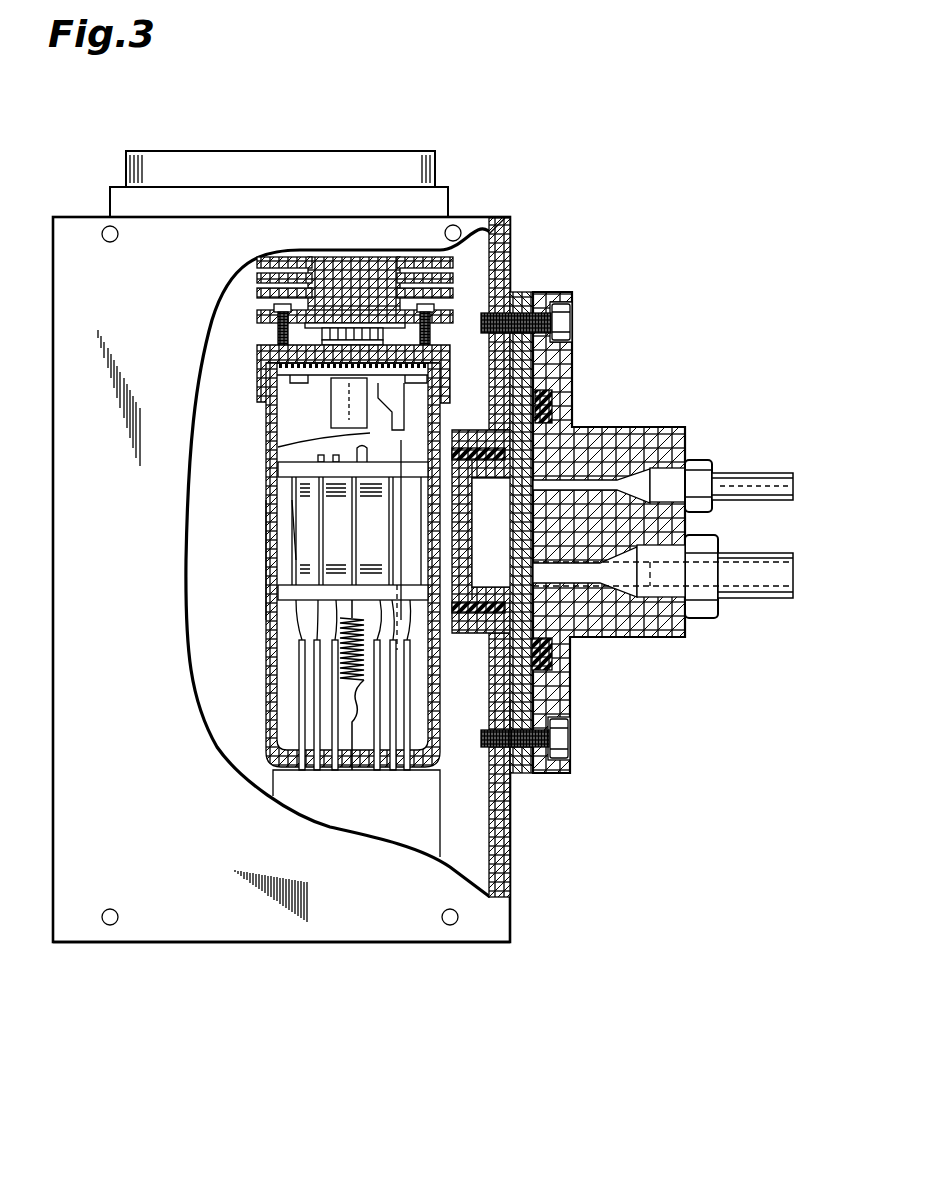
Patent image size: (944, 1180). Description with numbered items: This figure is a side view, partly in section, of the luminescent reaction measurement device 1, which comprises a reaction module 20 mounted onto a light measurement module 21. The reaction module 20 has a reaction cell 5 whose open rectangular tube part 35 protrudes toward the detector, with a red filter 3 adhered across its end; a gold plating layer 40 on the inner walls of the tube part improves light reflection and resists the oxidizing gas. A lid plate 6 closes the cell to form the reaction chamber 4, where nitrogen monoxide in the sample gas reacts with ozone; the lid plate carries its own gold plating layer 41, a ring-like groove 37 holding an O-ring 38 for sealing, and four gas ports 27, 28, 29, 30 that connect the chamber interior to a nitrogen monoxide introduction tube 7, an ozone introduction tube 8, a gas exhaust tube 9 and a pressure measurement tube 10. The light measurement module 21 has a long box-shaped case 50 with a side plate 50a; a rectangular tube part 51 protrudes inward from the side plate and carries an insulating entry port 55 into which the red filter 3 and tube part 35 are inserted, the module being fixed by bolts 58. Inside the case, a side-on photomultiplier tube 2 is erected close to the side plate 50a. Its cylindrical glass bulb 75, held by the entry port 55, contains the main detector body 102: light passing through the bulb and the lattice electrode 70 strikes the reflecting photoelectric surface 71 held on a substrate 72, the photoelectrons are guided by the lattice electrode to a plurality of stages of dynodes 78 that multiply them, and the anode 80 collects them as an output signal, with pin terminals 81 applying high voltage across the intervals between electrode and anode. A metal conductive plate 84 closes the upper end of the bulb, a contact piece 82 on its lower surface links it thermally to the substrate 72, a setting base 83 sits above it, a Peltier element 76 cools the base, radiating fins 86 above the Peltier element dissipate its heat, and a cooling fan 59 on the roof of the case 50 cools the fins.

The luminescent reaction measurement device 1 is at (500, 1050).
The photomultiplier tube 2 is at (262, 563).
The red filter 3 is at (472, 650).
The reaction chamber 4 is at (560, 648).
The reaction cell 5 is at (523, 289).
The lid plate 6 is at (555, 290).
The nitrogen monoxide introduction tube 7 is at (765, 482).
The ozone introduction tube 8 is at (727, 488).
The gas exhaust tube 9 is at (752, 597).
The pressure measurement tube 10 is at (771, 582).
The reaction module 20 is at (618, 848).
The light measurement module 21 is at (340, 946).
The gas port 27 is at (617, 480).
The gas port 28 is at (650, 465).
The gas port 29 is at (622, 565).
The gas port 30 is at (672, 600).
The rectangular tube part 35 is at (496, 468).
The groove 37 is at (548, 398).
The O-ring 38 is at (552, 412).
The gold plating layer 40 is at (520, 576).
The gold plating layer 41 is at (686, 522).
The case 50 is at (75, 290).
The side plate 50a is at (512, 875).
The rectangular tube part 51 is at (484, 448).
The entry port 55 is at (474, 456).
The bolts 58 is at (562, 328).
The cooling fan 59 is at (130, 160).
The lattice electrode 70 is at (404, 495).
The photoelectric surface 71 is at (398, 640).
The substrate 72 is at (300, 440).
The glass bulb 75 is at (268, 692).
The Peltier element 76 is at (320, 333).
The dynodes 78 is at (292, 505).
The anode 80 is at (372, 600).
The pin terminals 81 is at (370, 770).
The contact piece 82 is at (336, 400).
The setting base 83 is at (456, 357).
The conductive plate 84 is at (268, 392).
The radiating fins 86 is at (442, 272).
The main detector body 102 is at (289, 520).